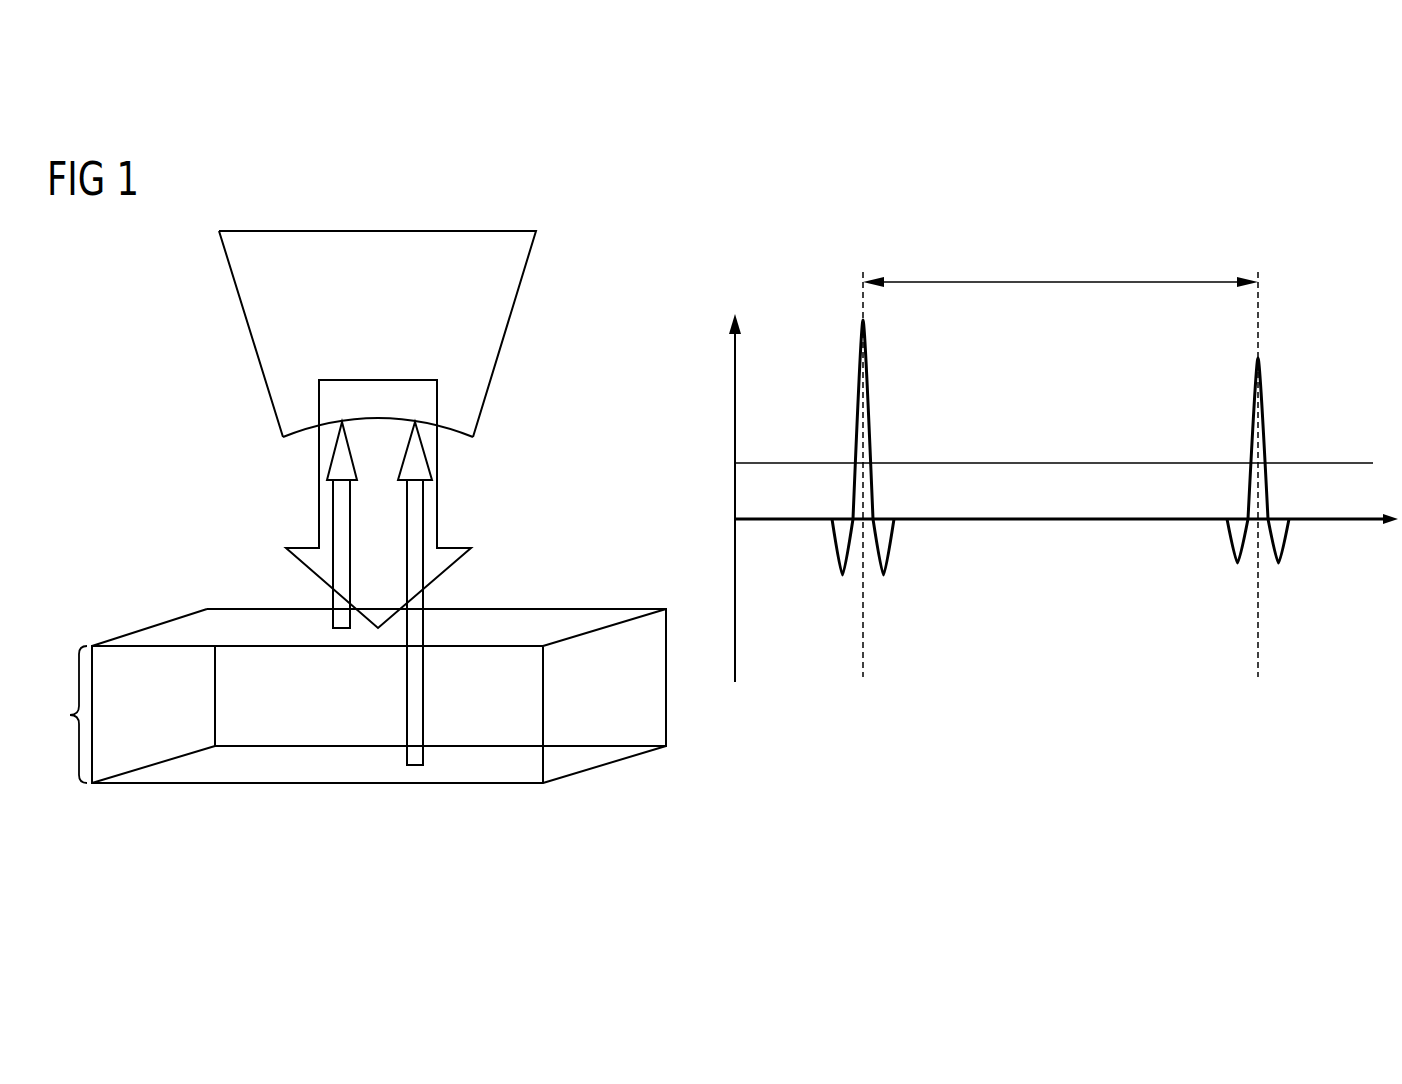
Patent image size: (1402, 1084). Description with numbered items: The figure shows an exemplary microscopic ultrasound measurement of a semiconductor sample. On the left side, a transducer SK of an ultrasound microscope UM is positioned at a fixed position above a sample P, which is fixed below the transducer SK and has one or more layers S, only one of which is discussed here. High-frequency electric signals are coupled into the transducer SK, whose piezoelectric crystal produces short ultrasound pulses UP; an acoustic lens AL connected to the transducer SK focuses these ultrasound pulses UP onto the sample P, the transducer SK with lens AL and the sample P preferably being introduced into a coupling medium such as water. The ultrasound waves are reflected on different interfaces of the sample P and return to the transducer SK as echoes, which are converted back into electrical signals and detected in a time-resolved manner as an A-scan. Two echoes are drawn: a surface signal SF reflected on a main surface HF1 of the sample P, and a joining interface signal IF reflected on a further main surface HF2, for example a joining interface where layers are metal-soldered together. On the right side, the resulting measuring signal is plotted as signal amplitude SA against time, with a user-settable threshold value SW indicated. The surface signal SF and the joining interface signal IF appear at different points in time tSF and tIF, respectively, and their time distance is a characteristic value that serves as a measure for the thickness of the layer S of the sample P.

The transducer SK is at (378, 230).
The ultrasound pulses UP is at (380, 380).
The acoustic lens AL is at (452, 430).
The ultrasound microscope UM is at (120, 320).
The surface signal SF is at (333, 519).
The joining interface signal IF is at (423, 533).
The semiconductor sample P is at (651, 683).
The main surface HF1 is at (525, 623).
The further main surface HF2 is at (318, 788).
The layer S is at (67, 714).
The signal amplitude SA is at (717, 496).
The threshold value SW is at (1307, 460).
The time of the surface signal tSF is at (873, 514).
The time of the joining interface signal tIF is at (1266, 514).